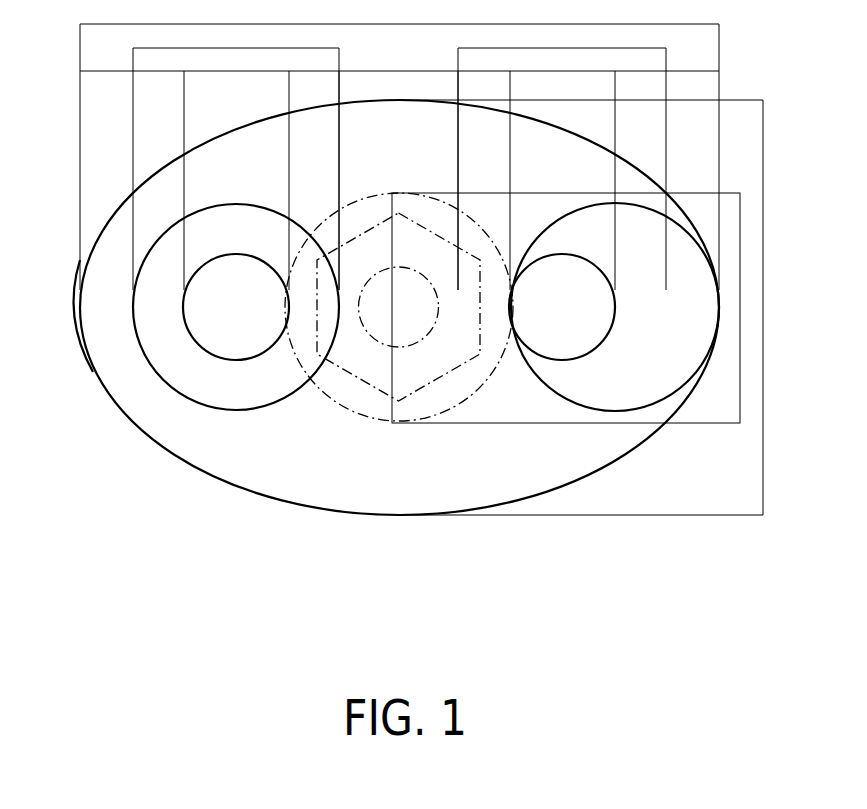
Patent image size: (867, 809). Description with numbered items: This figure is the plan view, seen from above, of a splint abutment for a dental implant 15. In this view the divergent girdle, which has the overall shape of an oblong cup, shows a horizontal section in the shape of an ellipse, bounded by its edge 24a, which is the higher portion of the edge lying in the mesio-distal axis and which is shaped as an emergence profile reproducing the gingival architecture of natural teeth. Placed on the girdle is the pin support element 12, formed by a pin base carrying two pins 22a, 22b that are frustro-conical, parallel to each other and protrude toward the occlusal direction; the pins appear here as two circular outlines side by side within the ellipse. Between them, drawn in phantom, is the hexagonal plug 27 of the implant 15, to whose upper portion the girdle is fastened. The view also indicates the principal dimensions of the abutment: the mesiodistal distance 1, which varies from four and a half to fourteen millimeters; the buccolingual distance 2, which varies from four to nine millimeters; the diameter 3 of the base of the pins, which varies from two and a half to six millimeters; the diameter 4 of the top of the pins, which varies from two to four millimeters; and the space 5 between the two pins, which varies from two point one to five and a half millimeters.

The mesiodistal distance 1 is at (399, 145).
The buccolingual distance 2 is at (590, 307).
The diameter of the base of the pins 3 is at (399, 158).
The diameter of the top of the pins 4 is at (399, 169).
The space between the two pins 5 is at (398, 169).
The pin support element 12 is at (383, 475).
The implant 15 is at (442, 415).
The pin 22a is at (227, 338).
The pin 22b is at (576, 333).
The edge 24a is at (93, 372).
The hexagonal plug 27 is at (447, 375).